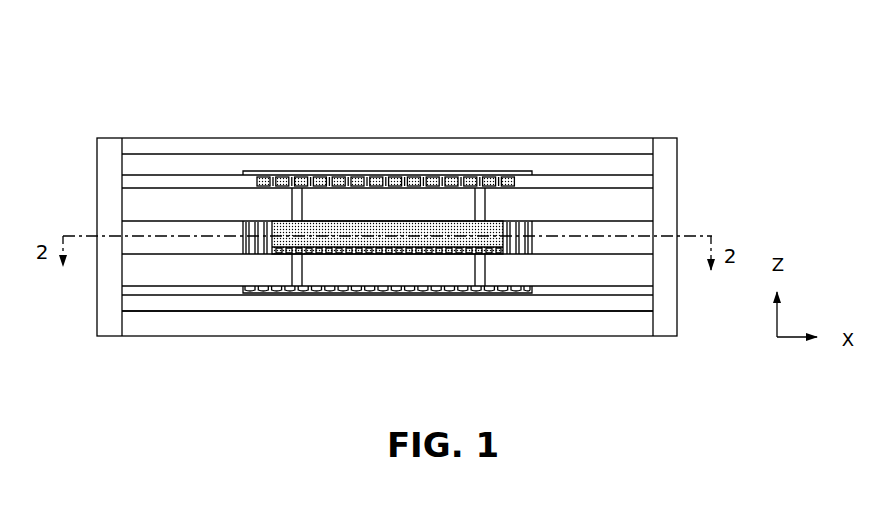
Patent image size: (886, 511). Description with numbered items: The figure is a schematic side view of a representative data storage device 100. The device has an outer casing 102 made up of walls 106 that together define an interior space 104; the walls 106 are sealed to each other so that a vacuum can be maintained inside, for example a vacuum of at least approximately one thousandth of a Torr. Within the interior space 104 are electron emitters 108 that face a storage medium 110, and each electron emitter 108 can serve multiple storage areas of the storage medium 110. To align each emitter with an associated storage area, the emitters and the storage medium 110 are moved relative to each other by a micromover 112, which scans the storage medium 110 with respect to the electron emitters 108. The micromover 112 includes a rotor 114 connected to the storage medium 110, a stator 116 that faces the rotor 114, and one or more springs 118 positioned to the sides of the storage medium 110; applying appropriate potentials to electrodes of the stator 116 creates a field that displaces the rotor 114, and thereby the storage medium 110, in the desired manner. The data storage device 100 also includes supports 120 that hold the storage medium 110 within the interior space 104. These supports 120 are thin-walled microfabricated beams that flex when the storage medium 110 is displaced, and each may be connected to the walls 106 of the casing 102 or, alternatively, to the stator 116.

The data storage device 100 is at (766, 64).
The outer casing 102 is at (710, 180).
The interior space 104 is at (156, 192).
The walls 106 is at (553, 147).
The electron emitters 108 is at (297, 176).
The storage medium 110 is at (413, 225).
The micromover 112 is at (230, 310).
The rotor 114 is at (358, 252).
The stator 116 is at (333, 290).
The springs 118 is at (244, 212).
The supports 120 is at (302, 200).